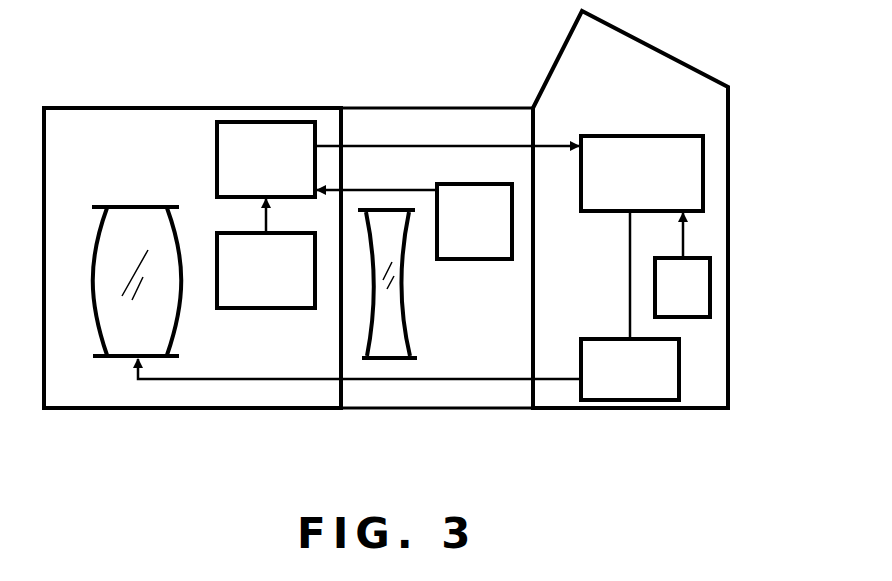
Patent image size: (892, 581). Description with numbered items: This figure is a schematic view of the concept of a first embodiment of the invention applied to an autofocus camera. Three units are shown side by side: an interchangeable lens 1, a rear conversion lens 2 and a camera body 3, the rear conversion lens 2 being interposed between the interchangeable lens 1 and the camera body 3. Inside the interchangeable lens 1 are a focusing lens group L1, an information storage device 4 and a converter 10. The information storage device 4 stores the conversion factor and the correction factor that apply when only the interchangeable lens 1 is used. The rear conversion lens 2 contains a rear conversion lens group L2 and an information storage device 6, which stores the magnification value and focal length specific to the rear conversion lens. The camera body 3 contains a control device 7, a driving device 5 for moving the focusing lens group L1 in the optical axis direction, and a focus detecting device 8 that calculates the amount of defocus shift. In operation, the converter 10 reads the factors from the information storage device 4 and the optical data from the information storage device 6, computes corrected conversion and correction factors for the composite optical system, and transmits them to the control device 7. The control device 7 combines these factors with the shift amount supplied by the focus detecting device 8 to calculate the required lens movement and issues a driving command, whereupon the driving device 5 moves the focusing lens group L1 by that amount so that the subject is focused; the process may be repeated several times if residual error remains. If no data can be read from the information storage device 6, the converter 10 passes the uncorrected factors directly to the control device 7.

The interchangeable lens 1 is at (180, 410).
The rear conversion lens 2 is at (443, 410).
The camera body 3 is at (579, 410).
The information storage device 4 is at (220, 232).
The driving device 5 is at (646, 400).
The information storage device 6 is at (478, 184).
The control device 7 is at (703, 180).
The focus detecting device 8 is at (710, 295).
The converter 10 is at (288, 122).
The focusing lens group L1 is at (131, 206).
The rear conversion lens group L2 is at (388, 210).